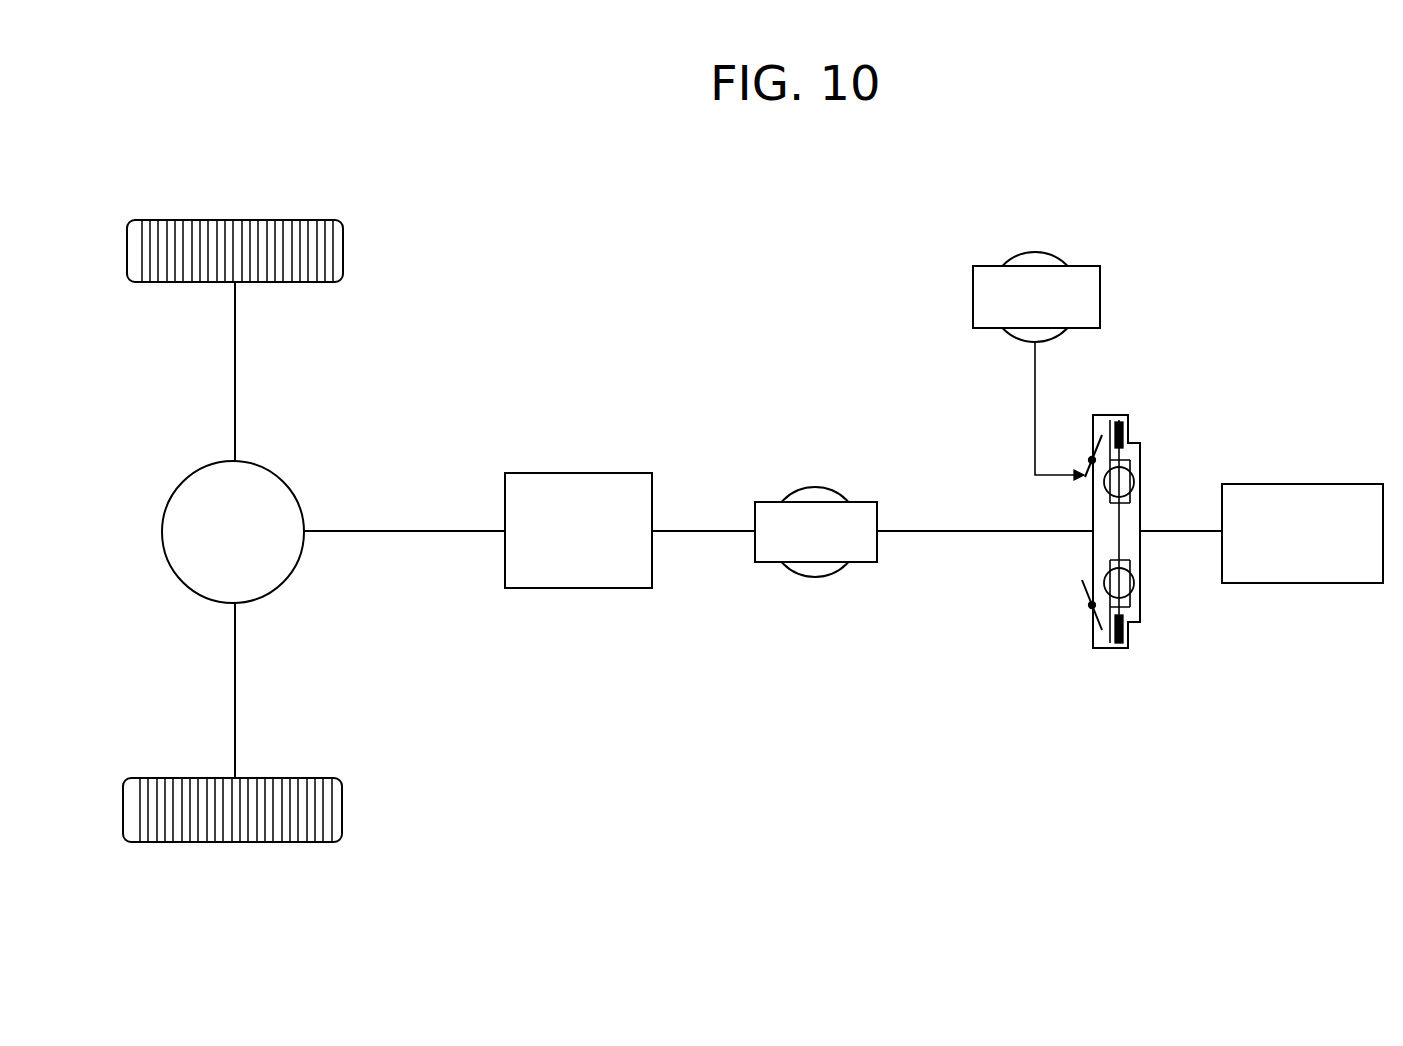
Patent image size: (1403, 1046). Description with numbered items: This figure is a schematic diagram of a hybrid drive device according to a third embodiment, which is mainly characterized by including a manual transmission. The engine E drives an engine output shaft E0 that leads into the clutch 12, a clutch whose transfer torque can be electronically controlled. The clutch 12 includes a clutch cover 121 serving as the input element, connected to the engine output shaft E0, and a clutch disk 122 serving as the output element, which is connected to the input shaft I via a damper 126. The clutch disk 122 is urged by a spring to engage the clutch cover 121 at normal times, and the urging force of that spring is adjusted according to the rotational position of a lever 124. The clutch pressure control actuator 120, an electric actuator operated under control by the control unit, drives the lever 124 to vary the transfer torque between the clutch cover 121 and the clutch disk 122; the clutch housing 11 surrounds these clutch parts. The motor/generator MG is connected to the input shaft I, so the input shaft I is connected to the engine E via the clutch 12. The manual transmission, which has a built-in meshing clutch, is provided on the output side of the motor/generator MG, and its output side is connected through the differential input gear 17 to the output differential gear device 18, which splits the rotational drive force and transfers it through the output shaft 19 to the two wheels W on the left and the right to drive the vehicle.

The clutch 12 is at (1115, 485).
The clutch housing 11 is at (1140, 456).
The differential input gear 17 is at (407, 528).
The output differential gear device 18 is at (167, 502).
The output shaft 19 is at (235, 404).
The clutch pressure control actuator 120 is at (1083, 265).
The clutch cover 121 is at (1140, 443).
The clutch disk 122 is at (1113, 550).
The lever 124 is at (1083, 483).
The damper 126 is at (1135, 481).
The wheels W is at (343, 250).
The engine E is at (1313, 483).
The engine output shaft E0 is at (1182, 530).
The input shaft I is at (963, 530).
The motor/generator MG is at (773, 500).